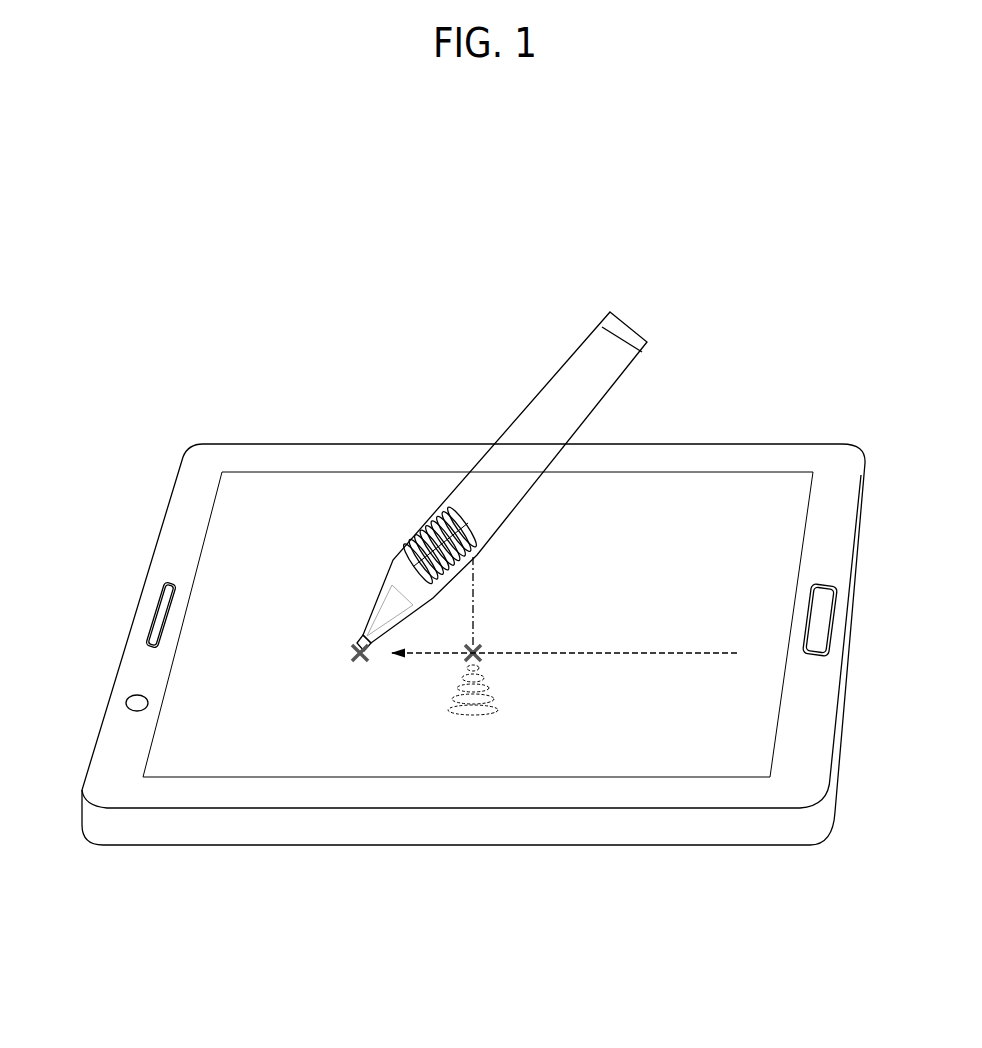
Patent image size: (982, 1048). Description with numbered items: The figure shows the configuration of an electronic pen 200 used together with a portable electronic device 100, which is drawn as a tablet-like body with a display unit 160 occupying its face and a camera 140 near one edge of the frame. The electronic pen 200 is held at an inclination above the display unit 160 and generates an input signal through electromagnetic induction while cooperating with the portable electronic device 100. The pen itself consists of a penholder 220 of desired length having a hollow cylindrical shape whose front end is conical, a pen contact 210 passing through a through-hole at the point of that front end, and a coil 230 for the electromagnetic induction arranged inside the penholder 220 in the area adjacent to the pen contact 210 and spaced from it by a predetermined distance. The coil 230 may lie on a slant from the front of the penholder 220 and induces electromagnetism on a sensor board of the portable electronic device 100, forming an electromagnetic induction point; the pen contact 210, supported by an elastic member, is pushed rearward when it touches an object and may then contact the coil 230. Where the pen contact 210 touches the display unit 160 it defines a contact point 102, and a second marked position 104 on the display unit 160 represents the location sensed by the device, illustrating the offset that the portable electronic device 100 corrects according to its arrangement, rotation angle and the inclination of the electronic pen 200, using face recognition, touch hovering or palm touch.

The portable electronic device 100 is at (273, 423).
The contact point 102 is at (357, 667).
The detected/hover position point 104 is at (490, 645).
The camera 140 is at (127, 703).
The display unit 160 is at (727, 515).
The electronic pen 200 is at (632, 318).
The pen contact 210 is at (356, 637).
The penholder 220 is at (433, 512).
The coil 230 is at (468, 513).